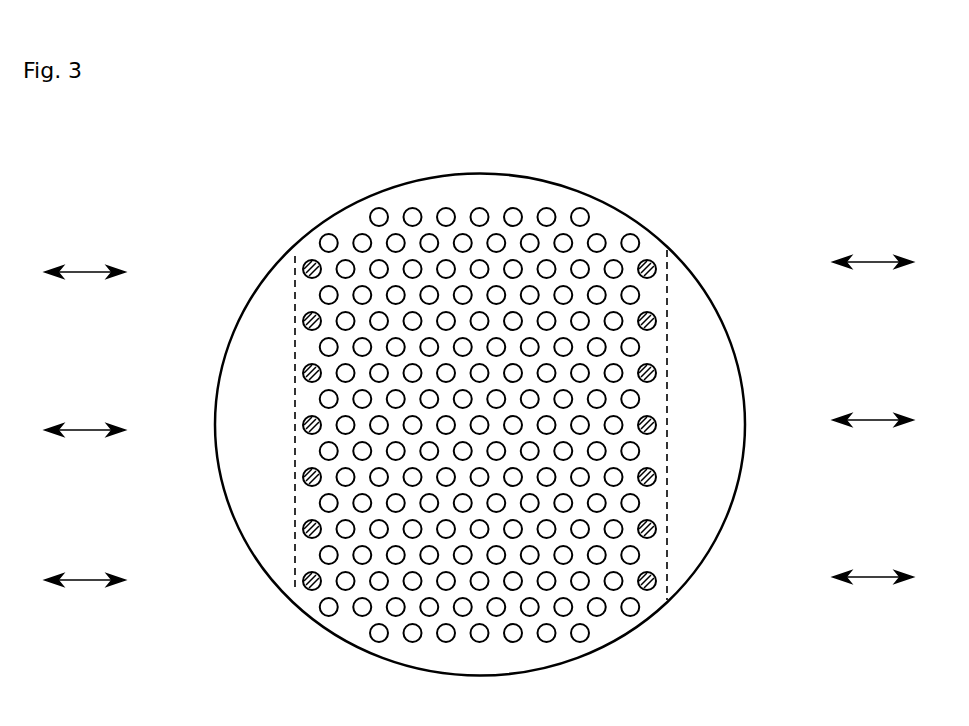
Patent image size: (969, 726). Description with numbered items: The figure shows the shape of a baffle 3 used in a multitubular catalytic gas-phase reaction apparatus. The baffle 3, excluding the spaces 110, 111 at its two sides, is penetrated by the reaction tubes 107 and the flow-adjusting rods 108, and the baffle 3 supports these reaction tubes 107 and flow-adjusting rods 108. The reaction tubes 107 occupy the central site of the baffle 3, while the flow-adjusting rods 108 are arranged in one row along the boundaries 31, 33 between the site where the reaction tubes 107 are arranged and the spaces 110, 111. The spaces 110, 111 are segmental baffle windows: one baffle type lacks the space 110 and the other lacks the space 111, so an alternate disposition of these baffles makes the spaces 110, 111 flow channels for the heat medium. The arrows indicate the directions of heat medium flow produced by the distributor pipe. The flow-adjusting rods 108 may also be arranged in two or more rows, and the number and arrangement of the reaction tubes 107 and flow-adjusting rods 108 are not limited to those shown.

The baffle 3 is at (238, 140).
The reaction tubes 107 is at (344, 262).
The flow-adjusting rods 108 is at (310, 261).
The boundary 31 is at (295, 565).
The boundary 33 is at (667, 560).
The space 110 is at (250, 430).
The space 111 is at (715, 422).